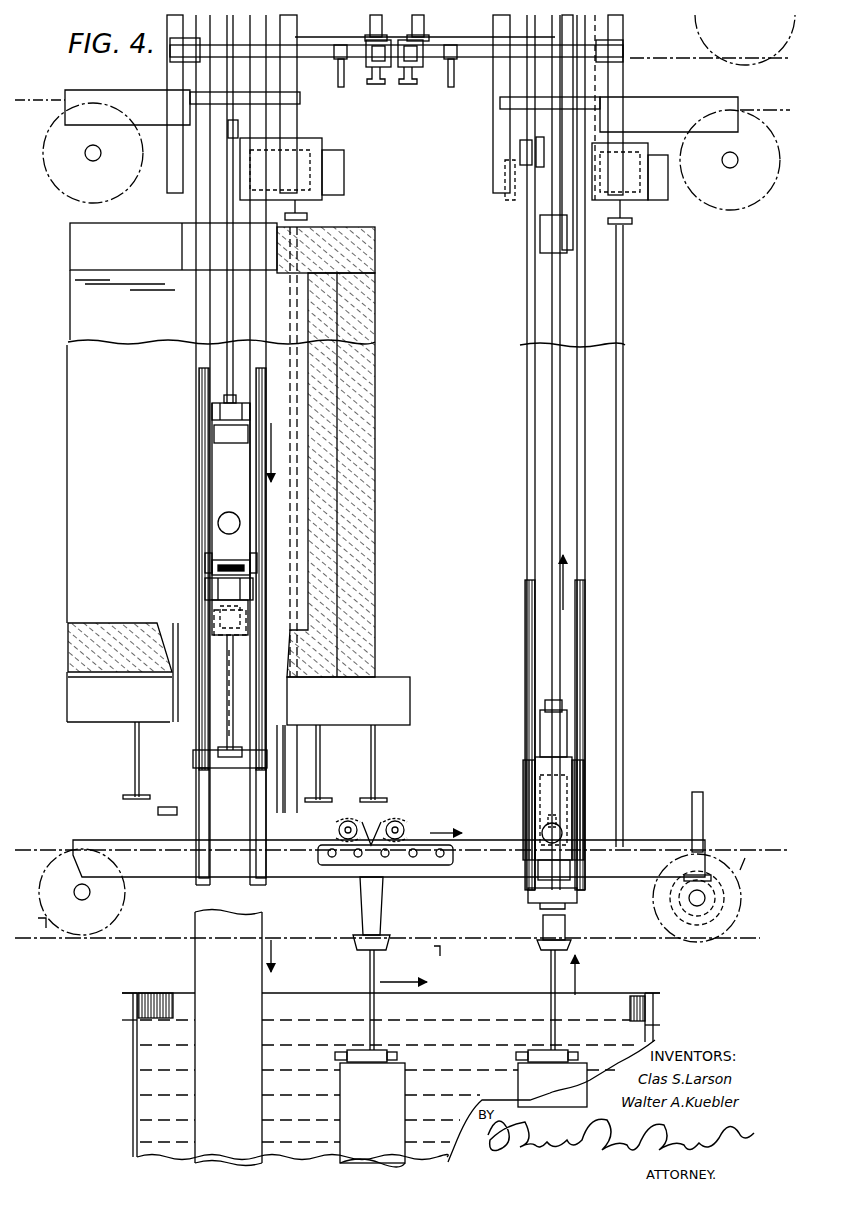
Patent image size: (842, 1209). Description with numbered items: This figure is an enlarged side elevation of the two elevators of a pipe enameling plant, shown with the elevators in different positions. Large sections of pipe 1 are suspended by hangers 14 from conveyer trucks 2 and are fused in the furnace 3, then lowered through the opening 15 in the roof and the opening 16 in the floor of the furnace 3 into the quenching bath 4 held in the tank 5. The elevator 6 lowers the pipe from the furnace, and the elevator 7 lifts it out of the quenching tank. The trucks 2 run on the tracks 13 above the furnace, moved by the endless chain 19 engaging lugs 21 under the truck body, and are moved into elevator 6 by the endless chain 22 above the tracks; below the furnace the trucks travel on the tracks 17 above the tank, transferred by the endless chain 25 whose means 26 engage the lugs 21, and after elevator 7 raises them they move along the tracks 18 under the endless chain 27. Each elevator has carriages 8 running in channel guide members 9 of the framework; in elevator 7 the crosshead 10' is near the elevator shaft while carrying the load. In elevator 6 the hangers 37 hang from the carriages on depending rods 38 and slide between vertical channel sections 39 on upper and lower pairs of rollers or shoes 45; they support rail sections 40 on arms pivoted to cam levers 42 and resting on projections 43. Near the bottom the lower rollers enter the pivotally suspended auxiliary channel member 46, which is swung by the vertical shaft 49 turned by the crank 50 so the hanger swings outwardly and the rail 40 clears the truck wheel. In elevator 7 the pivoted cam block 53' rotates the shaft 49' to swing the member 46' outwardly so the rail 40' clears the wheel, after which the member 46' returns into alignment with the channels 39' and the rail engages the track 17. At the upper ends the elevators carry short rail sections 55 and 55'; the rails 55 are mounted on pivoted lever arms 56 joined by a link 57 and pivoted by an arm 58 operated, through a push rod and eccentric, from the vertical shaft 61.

The pipe 1 is at (195, 965).
The conveyer truck 2 is at (240, 620).
The furnace 3 is at (365, 415).
The quenching bath 4 is at (312, 1018).
The tank 5 is at (133, 1044).
The elevator 6 is at (217, 450).
The elevator 7 is at (550, 452).
The carriage 8 is at (545, 148).
The channel guide member 9 is at (167, 178).
The crosshead 10' is at (529, 142).
The tracks 13 is at (120, 90).
The hanger 14 is at (227, 695).
The opening 15 is at (190, 225).
The opening 16 is at (172, 632).
The tracks 17 is at (125, 840).
The tracks 18 is at (676, 97).
The endless chain 19 is at (35, 100).
The lug 21 is at (375, 845).
The endless chain 22 is at (714, 60).
The endless chain 25 is at (428, 865).
The engaging means 26 is at (358, 835).
The endless chain 27 is at (760, 110).
The hanger 37 is at (218, 491).
The depending rod 38 is at (227, 312).
The vertical channel section 39 is at (223, 569).
The vertical channel section 39' is at (548, 735).
The rail section 40 is at (205, 485).
The rail section 40' is at (576, 830).
The cam lever 42 is at (222, 590).
The projection 43 is at (222, 568).
The roller or shoe 45 is at (212, 425).
The auxiliary channel member 46 is at (216, 812).
The auxiliary channel member 46' is at (544, 790).
The vertical shaft 49 is at (227, 521).
The vertical shaft 49' is at (611, 536).
The crank 50 is at (240, 130).
The pivoted cam block 53' is at (534, 140).
The short rail section 55 is at (256, 88).
The short rail section 55' is at (531, 112).
The pivoted lever arm 56 is at (270, 70).
The link 57 is at (346, 70).
The arm 58 is at (408, 70).
The vertical shaft 61 is at (370, 22).